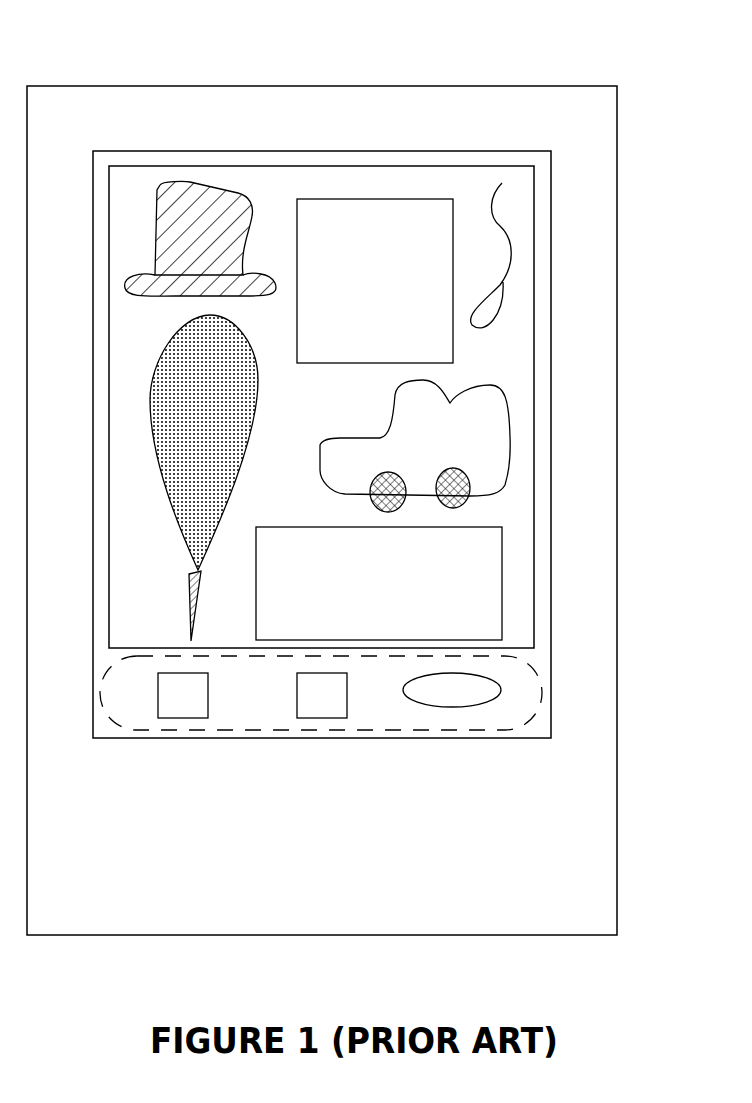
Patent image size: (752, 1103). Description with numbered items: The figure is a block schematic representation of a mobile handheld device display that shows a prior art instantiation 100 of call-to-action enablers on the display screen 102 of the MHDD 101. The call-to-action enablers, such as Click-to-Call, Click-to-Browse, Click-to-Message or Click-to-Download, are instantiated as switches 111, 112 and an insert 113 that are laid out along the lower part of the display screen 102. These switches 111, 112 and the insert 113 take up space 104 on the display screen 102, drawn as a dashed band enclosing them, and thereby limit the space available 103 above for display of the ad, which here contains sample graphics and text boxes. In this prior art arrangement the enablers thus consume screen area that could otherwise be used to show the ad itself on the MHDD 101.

The prior art instantiation 100 is at (533, 53).
The MHDD 101 is at (617, 583).
The display screen 102 is at (551, 408).
The space available for display of the ad 103 is at (535, 290).
The space taken up by call-to-action enablers 104 is at (537, 672).
The switch 111 is at (208, 706).
The switch 112 is at (347, 706).
The insert 113 is at (492, 700).